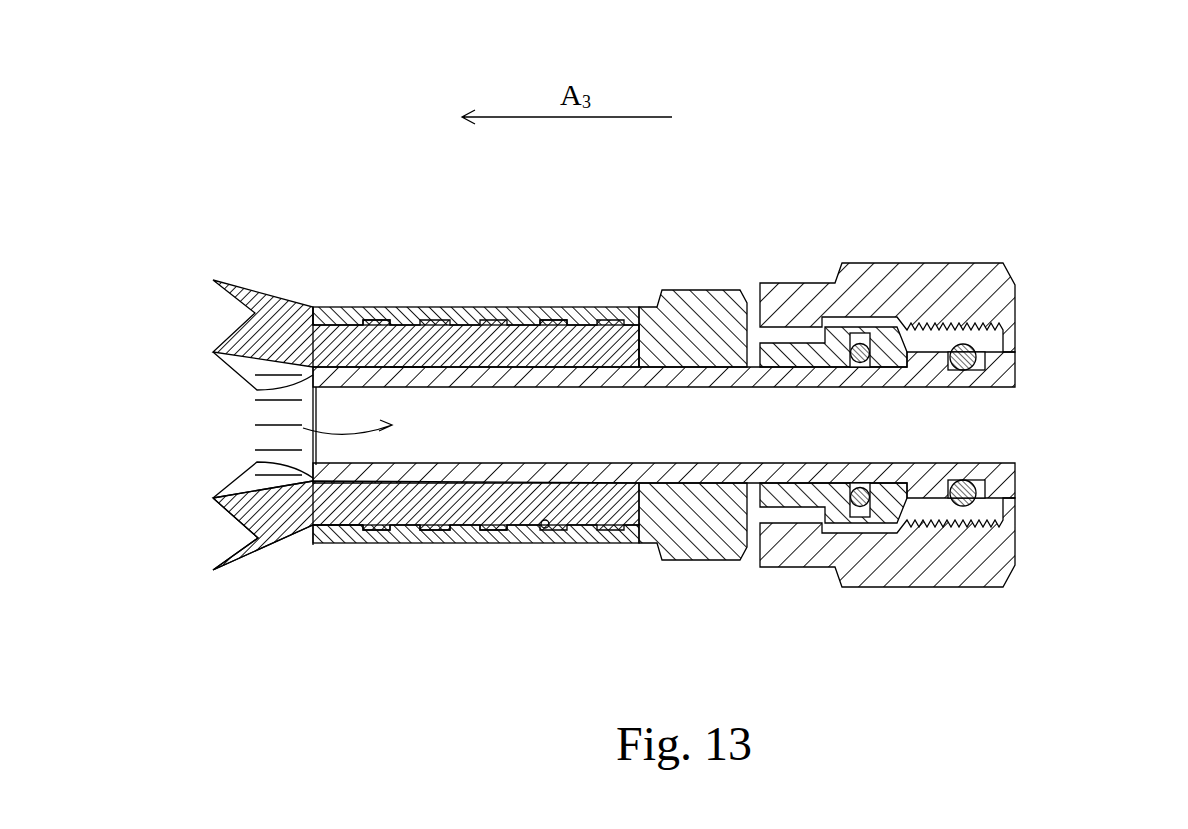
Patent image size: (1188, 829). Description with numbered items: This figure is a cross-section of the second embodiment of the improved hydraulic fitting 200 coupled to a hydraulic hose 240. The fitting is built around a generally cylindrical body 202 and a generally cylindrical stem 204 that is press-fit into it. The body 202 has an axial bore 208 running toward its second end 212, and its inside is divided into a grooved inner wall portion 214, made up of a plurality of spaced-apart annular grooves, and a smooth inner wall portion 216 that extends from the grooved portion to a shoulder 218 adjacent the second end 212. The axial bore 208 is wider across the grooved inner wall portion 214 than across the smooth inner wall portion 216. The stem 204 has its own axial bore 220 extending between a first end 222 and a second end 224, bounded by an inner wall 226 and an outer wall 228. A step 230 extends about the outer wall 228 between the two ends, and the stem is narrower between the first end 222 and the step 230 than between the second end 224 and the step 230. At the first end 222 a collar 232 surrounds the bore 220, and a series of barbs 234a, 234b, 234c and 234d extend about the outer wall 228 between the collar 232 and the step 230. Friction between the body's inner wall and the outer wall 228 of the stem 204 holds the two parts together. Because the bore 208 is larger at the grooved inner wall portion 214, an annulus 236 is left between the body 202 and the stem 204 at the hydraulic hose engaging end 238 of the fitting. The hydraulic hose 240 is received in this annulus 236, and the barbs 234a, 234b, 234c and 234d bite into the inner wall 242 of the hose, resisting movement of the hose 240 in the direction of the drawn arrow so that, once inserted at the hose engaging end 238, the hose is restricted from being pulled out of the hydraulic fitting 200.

The hydraulic fitting 200 is at (317, 165).
The body 202 is at (483, 543).
The stem 204 is at (520, 367).
The axial bore 208 is at (580, 350).
The second end 212 is at (897, 500).
The grooved inner wall portion 214 is at (549, 528).
The smooth inner wall portion 216 is at (700, 505).
The shoulder 218 is at (866, 507).
The axial bore 220 is at (257, 462).
The first end 222 is at (257, 390).
The second end 224 is at (1003, 375).
The inner wall 226 is at (465, 375).
The outer wall 228 is at (407, 370).
The step 230 is at (640, 367).
The collar 232 is at (317, 372).
The barb 234a is at (317, 527).
The barb 234b is at (370, 530).
The barb 234c is at (427, 537).
The barb 234d is at (497, 527).
The annulus 236 is at (367, 350).
The hydraulic hose engaging end 238 is at (215, 498).
The hydraulic hose 240 is at (215, 570).
The inner wall 242 is at (257, 462).